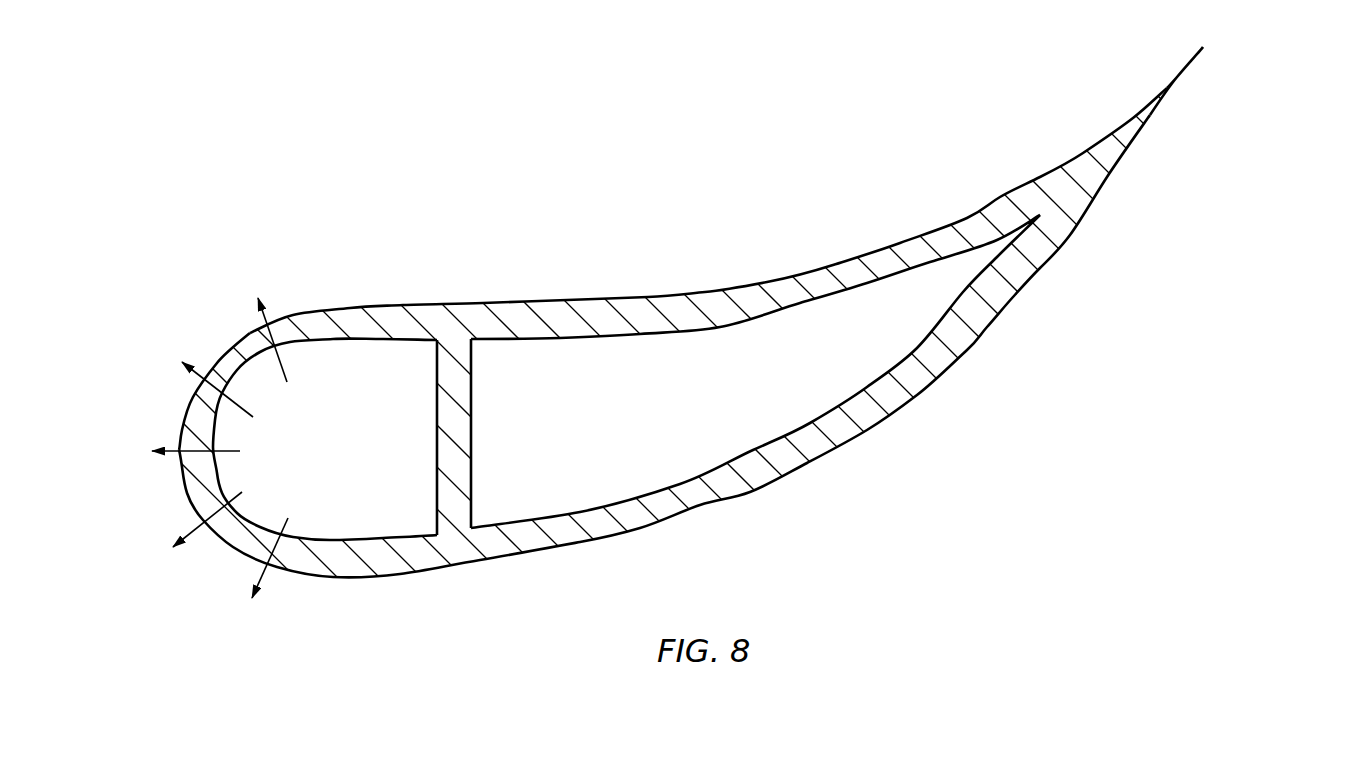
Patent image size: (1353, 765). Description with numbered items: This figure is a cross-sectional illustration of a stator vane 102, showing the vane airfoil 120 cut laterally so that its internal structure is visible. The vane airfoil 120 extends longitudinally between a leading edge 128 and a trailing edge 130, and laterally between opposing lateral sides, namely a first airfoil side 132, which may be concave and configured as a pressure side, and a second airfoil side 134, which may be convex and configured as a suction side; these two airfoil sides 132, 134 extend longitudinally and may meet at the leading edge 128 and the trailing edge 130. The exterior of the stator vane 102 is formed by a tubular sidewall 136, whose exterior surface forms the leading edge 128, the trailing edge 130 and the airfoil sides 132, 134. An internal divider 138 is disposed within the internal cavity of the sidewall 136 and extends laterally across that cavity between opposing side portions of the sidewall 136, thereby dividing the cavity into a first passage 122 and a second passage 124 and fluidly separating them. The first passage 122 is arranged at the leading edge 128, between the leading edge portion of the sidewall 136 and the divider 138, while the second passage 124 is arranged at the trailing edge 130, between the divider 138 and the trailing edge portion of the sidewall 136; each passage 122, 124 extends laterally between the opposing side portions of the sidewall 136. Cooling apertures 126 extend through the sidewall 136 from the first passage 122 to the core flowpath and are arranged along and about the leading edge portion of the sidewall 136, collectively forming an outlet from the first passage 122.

The stator vane 102 is at (676, 382).
The vane airfoil 120 is at (415, 138).
The first passage 122 is at (379, 458).
The second passage 124 is at (647, 425).
The cooling apertures 126 is at (274, 340).
The leading edge 128 is at (178, 440).
The trailing edge 130 is at (1203, 47).
The first airfoil side 132 is at (500, 303).
The second airfoil side 134 is at (503, 557).
The tubular sidewall 136 is at (673, 308).
The internal divider 138 is at (457, 397).